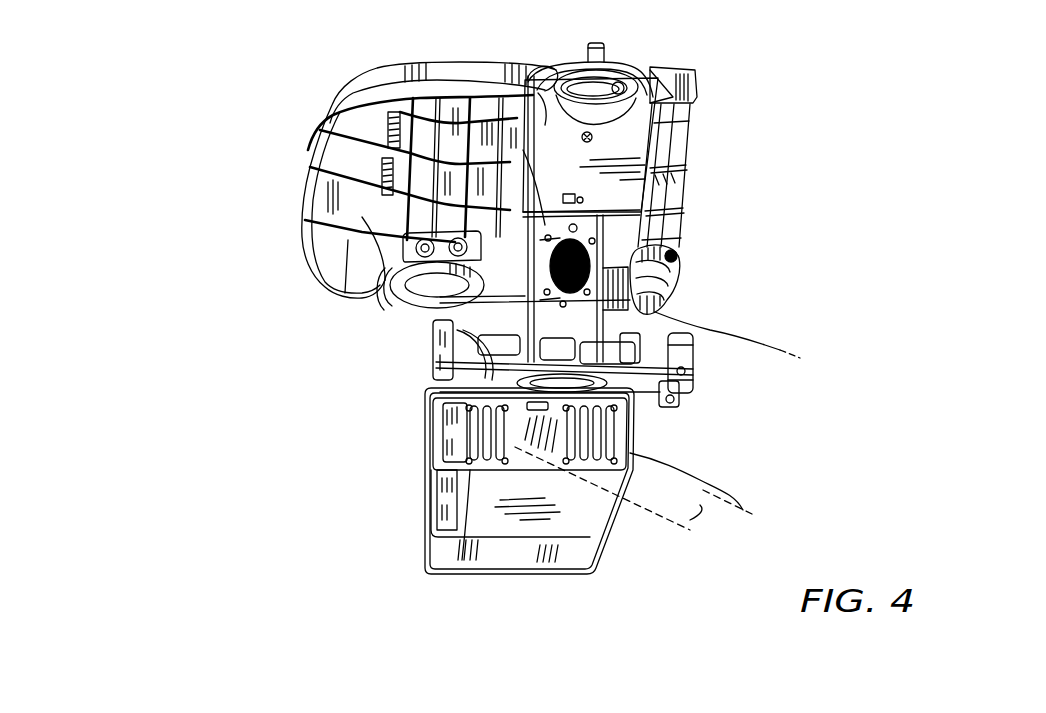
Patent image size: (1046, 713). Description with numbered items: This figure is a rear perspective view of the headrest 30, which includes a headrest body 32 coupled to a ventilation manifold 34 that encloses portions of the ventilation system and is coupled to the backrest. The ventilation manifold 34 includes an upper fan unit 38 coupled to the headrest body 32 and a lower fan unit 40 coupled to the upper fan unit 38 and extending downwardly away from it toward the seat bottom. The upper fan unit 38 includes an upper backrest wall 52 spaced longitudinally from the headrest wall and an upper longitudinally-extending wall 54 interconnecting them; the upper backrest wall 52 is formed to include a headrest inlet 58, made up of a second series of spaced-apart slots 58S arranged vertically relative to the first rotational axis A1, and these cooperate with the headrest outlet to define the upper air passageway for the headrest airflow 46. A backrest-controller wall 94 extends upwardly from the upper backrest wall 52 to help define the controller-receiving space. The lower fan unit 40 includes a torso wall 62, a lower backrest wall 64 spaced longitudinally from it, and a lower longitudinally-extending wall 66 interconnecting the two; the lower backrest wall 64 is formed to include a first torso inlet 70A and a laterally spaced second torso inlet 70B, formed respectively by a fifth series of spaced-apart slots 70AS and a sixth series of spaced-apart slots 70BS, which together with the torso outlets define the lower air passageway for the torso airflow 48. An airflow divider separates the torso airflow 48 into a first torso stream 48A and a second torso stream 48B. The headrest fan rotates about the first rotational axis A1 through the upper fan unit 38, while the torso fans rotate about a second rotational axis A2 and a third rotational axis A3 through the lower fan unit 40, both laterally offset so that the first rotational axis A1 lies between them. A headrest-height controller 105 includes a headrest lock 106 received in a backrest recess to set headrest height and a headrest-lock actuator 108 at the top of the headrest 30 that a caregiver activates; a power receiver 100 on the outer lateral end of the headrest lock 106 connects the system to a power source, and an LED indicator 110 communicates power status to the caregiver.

The headrest 30 is at (152, 108).
The headrest body 32 is at (326, 82).
The ventilation manifold 34 is at (697, 171).
The upper fan unit 38 is at (313, 167).
The lower fan unit 40 is at (411, 478).
The headrest airflow 46 is at (790, 350).
The torso airflow 48 is at (755, 573).
The first torso stream 48A is at (700, 523).
The second torso stream 48B is at (740, 503).
The upper backrest wall 52 is at (593, 223).
The upper longitudinally-extending wall 54 is at (445, 308).
The headrest inlet 58 is at (540, 200).
The second series of spaced-apart slots 58S is at (449, 167).
The torso wall 62 is at (422, 507).
The lower backrest wall 64 is at (565, 492).
The lower longitudinally-extending wall 66 is at (452, 445).
The first torso inlet 70A is at (510, 440).
The fifth series of spaced-apart slots 70AS is at (487, 434).
The second torso inlet 70B is at (615, 440).
The sixth series of spaced-apart slots 70BS is at (590, 434).
The backrest-controller wall 94 is at (552, 120).
The power receiver 100 is at (671, 413).
The headrest-height controller 105 is at (726, 41).
The headrest lock 106 is at (665, 367).
The headrest-lock actuator 108 is at (660, 90).
The LED indicator 110 is at (597, 40).
The first rotational axis A1 is at (680, 312).
The second rotational axis A2 is at (630, 497).
The third rotational axis A3 is at (723, 505).